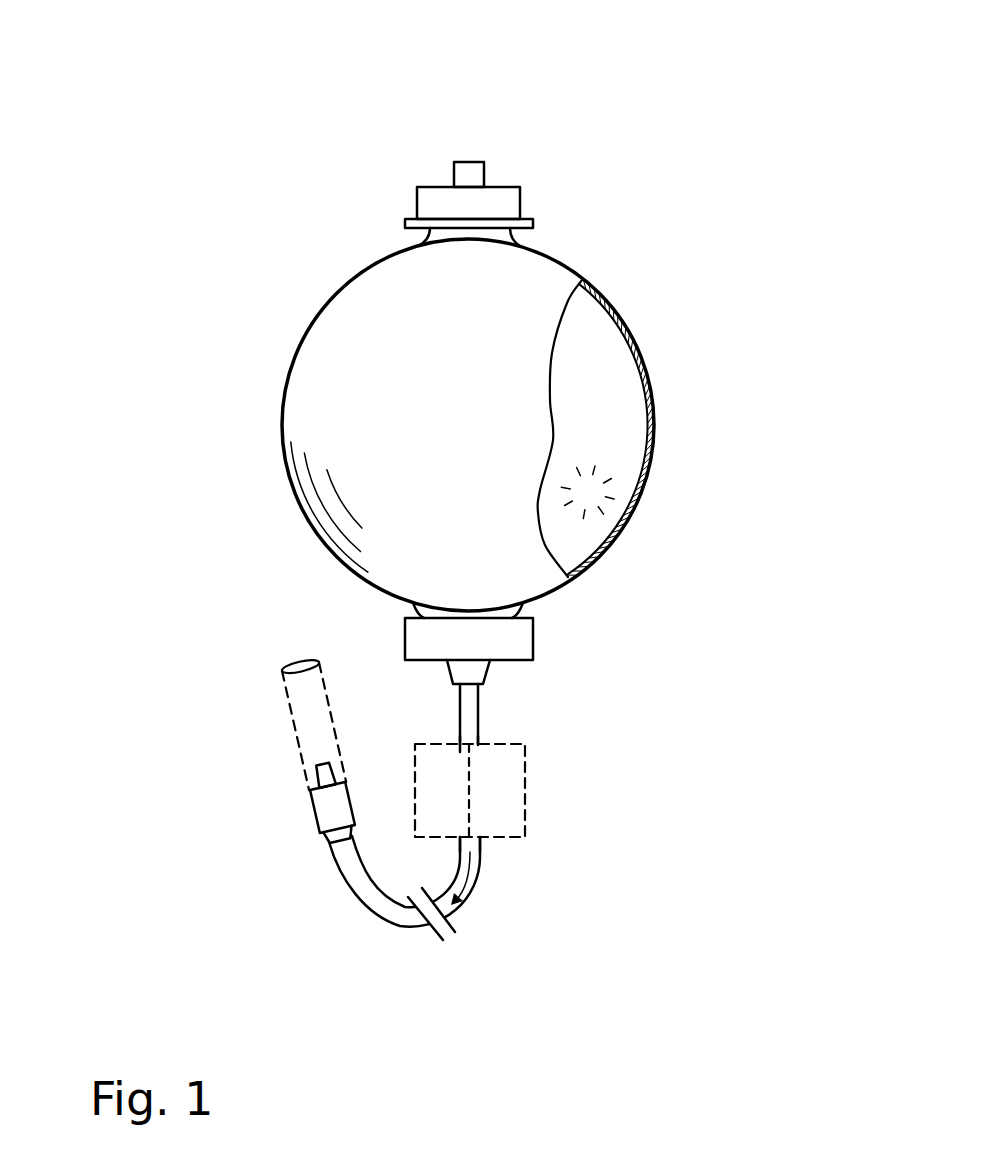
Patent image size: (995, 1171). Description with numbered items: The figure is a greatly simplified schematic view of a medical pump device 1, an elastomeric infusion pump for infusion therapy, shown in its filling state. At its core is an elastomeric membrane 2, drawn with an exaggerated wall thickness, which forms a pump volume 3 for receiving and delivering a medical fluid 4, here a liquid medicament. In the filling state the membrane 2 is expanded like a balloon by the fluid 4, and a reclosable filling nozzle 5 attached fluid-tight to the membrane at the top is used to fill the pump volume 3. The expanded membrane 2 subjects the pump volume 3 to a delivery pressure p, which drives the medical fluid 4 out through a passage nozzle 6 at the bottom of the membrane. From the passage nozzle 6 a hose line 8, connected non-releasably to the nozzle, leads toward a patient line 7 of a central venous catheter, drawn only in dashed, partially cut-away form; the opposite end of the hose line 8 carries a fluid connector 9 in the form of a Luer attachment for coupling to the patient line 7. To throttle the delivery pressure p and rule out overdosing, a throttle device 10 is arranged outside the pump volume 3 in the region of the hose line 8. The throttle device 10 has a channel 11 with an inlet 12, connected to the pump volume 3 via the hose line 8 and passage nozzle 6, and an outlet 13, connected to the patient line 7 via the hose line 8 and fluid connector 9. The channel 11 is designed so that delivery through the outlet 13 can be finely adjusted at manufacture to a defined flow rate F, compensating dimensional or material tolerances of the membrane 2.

The medical pump device 1 is at (420, 95).
The elastomeric membrane 2 is at (653, 373).
The pump volume 3 is at (600, 346).
The medical fluid 4 is at (628, 443).
The filling nozzle 5 is at (531, 168).
The passage nozzle 6 is at (550, 645).
The patient line 7 is at (272, 725).
The hose line 8 is at (478, 708).
The fluid connector 9 is at (318, 821).
The throttle device 10 is at (525, 813).
The channel 11 is at (506, 785).
The inlet 12 is at (468, 746).
The outlet 13 is at (490, 846).
The flow rate F is at (482, 890).
The delivery pressure p is at (587, 492).